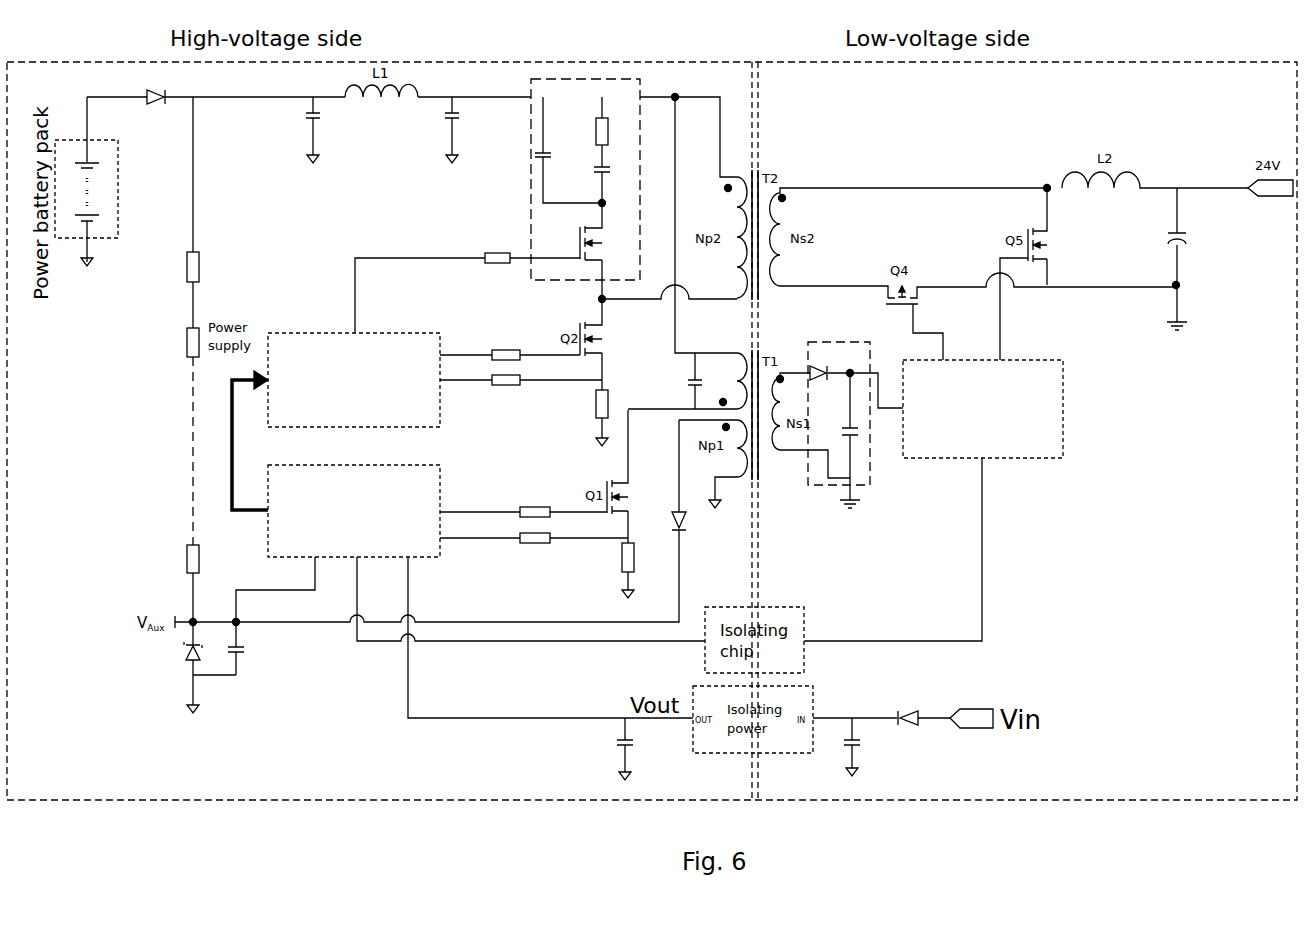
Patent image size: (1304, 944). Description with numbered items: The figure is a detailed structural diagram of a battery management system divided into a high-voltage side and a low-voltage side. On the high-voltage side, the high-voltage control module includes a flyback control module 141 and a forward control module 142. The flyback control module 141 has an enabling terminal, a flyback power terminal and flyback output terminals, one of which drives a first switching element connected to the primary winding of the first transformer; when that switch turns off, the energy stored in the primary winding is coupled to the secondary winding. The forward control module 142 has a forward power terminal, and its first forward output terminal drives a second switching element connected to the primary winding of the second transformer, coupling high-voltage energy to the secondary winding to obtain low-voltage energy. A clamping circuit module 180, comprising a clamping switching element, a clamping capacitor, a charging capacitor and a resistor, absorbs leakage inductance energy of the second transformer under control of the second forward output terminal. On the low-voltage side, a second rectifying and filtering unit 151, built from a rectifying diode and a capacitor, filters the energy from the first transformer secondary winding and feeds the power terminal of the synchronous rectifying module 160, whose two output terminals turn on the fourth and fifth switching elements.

The clamping circuit module 180 is at (530, 192).
The second rectifying and filtering unit 151 is at (821, 342).
The forward control module 142 is at (354, 380).
The flyback control module 141 is at (354, 511).
The synchronous rectifying module 160 is at (983, 409).